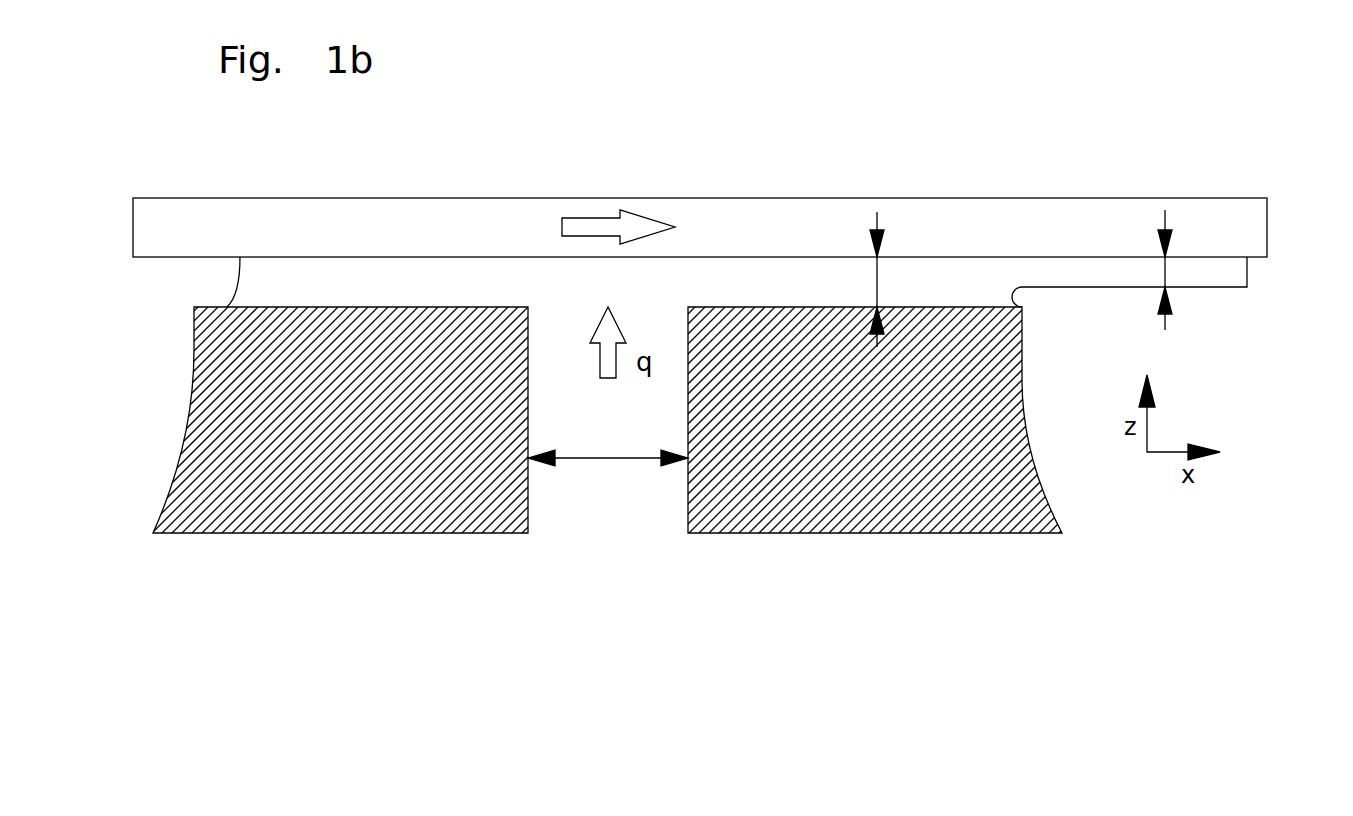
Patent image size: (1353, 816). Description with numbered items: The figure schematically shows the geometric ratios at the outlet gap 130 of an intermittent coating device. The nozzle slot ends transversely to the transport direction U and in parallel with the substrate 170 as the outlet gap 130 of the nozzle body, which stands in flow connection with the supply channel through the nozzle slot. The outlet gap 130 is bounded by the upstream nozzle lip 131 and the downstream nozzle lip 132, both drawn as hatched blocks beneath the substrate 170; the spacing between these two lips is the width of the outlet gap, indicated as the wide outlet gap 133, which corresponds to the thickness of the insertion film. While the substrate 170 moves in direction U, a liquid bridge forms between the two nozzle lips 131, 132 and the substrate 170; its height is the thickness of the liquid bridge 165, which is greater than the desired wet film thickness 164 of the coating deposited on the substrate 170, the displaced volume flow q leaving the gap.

The outlet gap 130 is at (555, 295).
The upstream nozzle lip 131 is at (285, 500).
The downstream nozzle lip 132 is at (877, 507).
The wide outlet gap 133 is at (608, 442).
The wet film thickness 164 is at (1165, 270).
The thickness of liquid bridge 165 is at (931, 279).
The substrate 170 is at (740, 228).